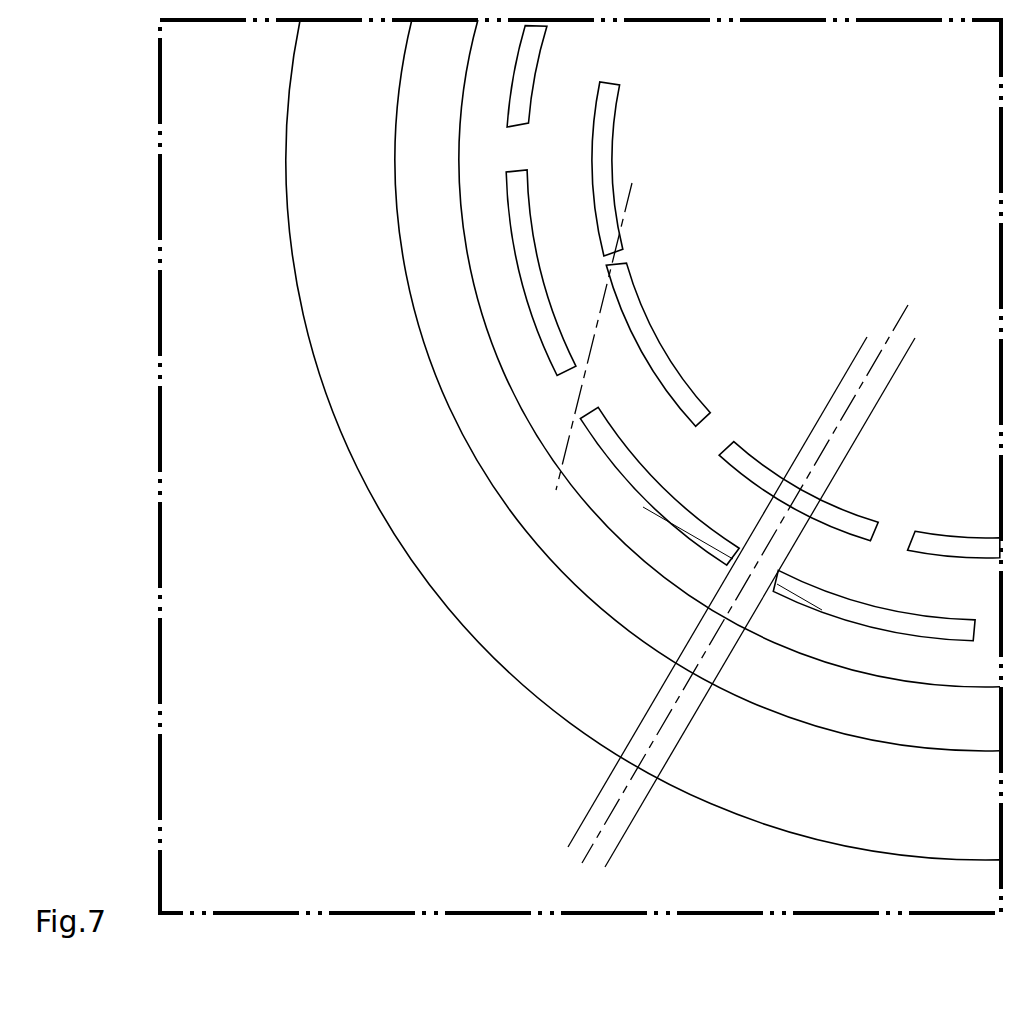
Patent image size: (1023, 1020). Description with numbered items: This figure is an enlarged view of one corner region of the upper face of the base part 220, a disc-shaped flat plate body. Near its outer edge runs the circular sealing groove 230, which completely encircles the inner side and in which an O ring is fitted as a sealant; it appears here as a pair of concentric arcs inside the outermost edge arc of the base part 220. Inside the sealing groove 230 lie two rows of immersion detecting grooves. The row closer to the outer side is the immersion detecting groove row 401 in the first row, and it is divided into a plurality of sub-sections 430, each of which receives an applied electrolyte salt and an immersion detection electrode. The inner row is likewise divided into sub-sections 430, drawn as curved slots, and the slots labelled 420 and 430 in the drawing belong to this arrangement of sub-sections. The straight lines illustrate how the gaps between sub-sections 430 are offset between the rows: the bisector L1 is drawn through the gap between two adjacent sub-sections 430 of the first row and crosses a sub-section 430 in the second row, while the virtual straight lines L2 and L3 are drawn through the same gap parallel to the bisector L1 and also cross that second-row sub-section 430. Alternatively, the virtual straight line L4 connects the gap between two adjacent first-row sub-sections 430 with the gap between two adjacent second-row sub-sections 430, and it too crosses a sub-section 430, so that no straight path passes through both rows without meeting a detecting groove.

The base part 220 is at (322, 303).
The sealing groove 230 is at (462, 378).
The immersion detecting groove row in the first row 401 is at (491, 200).
The second slit 420 is at (663, 318).
The sub-section 430 is at (740, 440).
The bisector L1 is at (905, 312).
The virtual straight line L2 is at (848, 365).
The virtual straight line L3 is at (898, 368).
The virtual straight line L4 is at (622, 213).